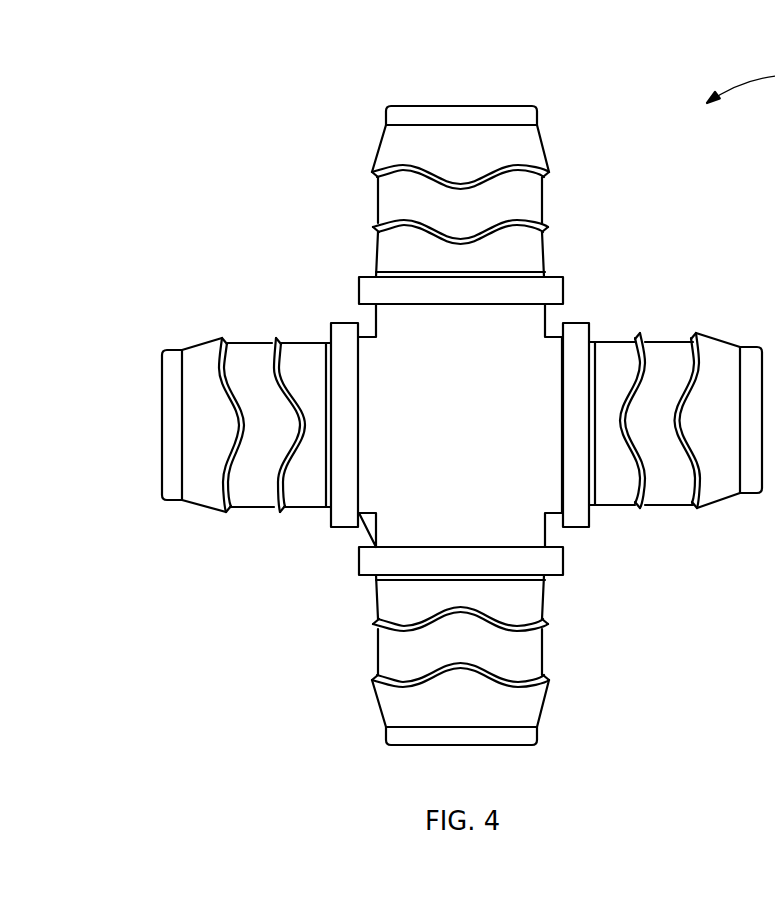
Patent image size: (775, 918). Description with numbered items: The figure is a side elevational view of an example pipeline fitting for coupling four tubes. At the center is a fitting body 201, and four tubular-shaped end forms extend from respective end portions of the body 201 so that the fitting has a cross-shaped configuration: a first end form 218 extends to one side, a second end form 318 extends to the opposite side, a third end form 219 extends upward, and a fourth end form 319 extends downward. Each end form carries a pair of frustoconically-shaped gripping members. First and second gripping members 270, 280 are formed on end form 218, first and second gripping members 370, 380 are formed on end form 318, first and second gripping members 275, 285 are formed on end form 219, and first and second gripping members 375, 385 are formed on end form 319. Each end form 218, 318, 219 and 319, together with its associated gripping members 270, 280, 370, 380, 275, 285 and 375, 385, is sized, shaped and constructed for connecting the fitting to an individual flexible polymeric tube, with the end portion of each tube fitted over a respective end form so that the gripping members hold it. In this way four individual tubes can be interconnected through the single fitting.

The fitting body 201 is at (491, 337).
The first tubular-shaped end form 218 is at (218, 429).
The third tubular-shaped end form 219 is at (454, 169).
The second tubular-shaped end form 318 is at (678, 447).
The fourth end form 319 is at (468, 666).
The first frustoconically-shaped gripping member 270 is at (202, 495).
The second frustoconically-shaped gripping member 280 is at (273, 503).
The first gripping member 275 is at (387, 145).
The second gripping member 285 is at (540, 215).
The first frustoconically-shaped gripping member 370 is at (727, 493).
The second frustoconically-shaped gripping member 380 is at (642, 502).
The first frustoconically-shaped gripping member 375 is at (397, 712).
The second frustoconically-shaped gripping member 385 is at (380, 630).